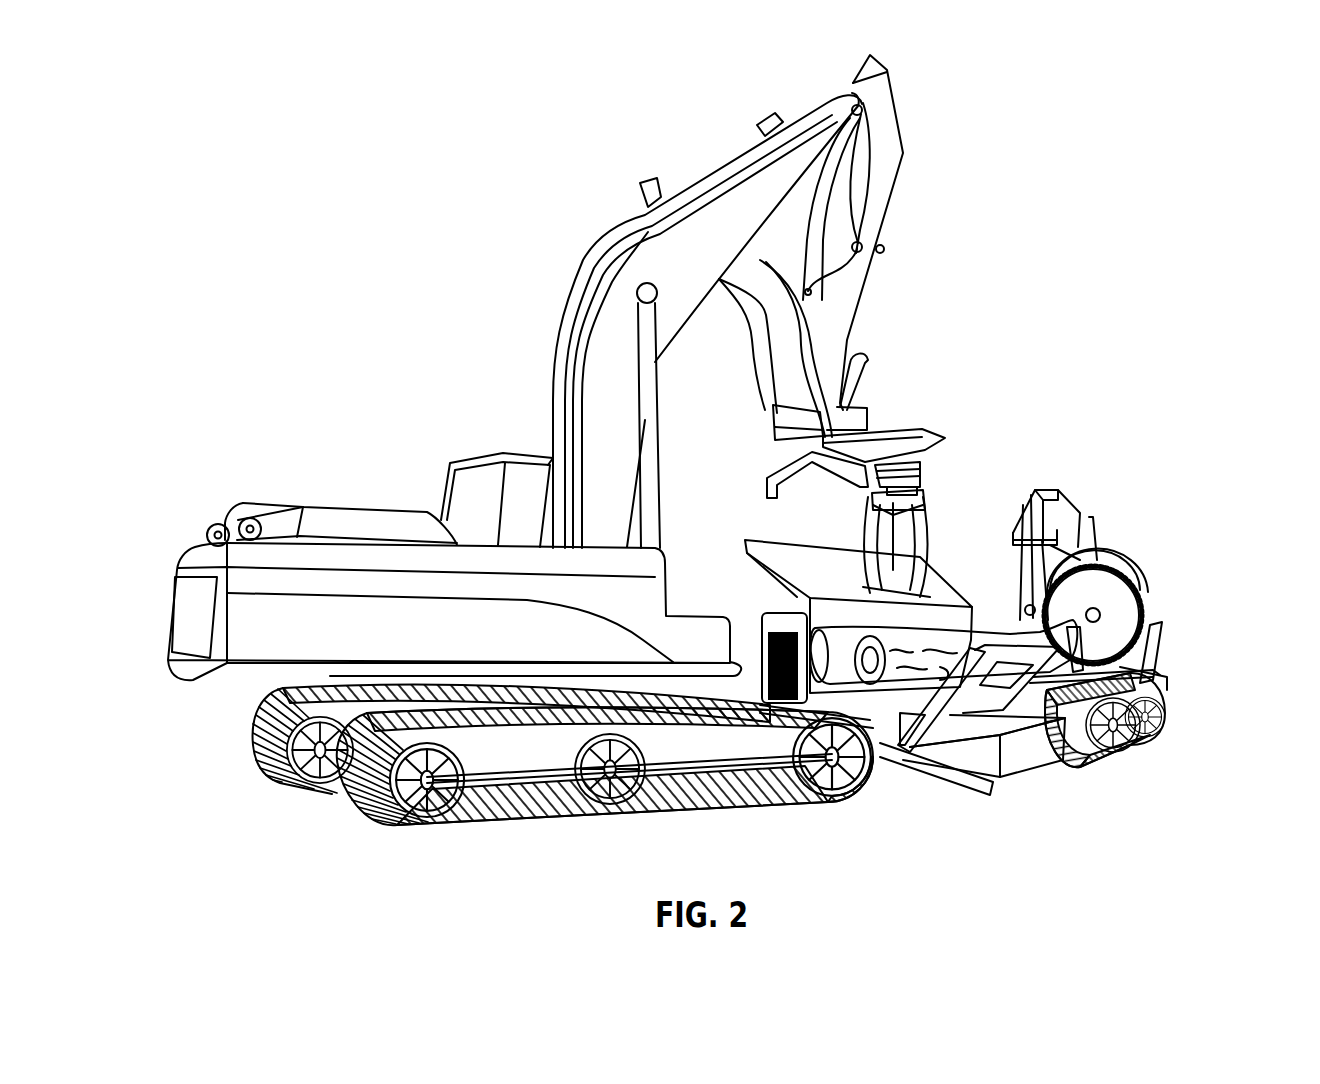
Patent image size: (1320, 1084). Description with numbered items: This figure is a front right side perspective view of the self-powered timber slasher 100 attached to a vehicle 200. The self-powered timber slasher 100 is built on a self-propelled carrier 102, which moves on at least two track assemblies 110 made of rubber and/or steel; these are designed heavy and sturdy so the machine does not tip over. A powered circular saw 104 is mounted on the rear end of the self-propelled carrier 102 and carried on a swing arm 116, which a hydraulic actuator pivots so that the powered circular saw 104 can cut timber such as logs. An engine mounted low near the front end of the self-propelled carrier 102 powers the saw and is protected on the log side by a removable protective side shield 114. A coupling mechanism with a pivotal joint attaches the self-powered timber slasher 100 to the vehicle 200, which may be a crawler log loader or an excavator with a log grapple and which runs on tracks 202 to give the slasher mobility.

The vehicle 200 is at (353, 368).
The tracks 202 is at (493, 810).
The self-powered timber slasher 100 is at (1088, 474).
The self-propelled carrier 102 is at (1157, 663).
The powered circular saw 104 is at (1140, 592).
The track assemblies 110 is at (1072, 762).
The removable protective side shield 114 is at (748, 540).
The swing arm 116 is at (1010, 570).